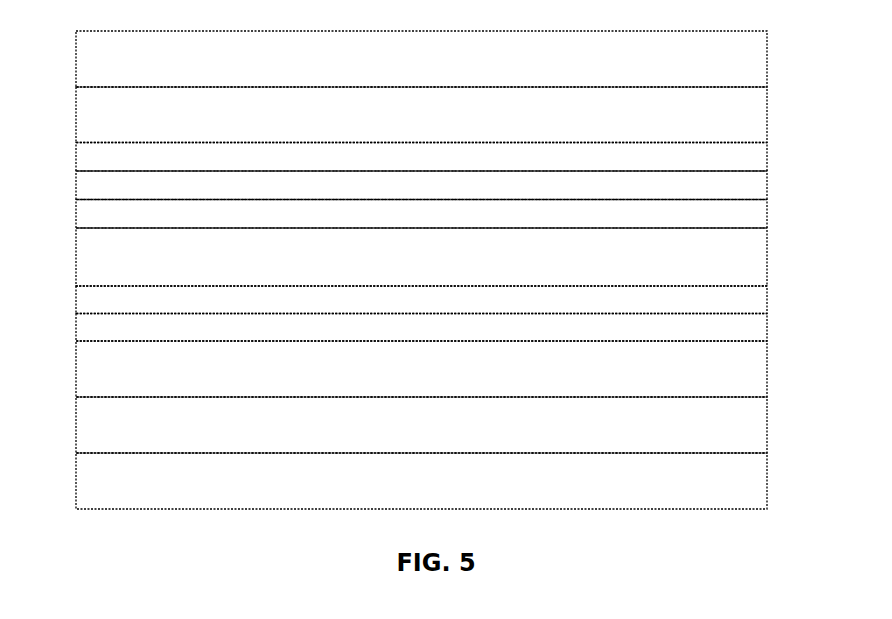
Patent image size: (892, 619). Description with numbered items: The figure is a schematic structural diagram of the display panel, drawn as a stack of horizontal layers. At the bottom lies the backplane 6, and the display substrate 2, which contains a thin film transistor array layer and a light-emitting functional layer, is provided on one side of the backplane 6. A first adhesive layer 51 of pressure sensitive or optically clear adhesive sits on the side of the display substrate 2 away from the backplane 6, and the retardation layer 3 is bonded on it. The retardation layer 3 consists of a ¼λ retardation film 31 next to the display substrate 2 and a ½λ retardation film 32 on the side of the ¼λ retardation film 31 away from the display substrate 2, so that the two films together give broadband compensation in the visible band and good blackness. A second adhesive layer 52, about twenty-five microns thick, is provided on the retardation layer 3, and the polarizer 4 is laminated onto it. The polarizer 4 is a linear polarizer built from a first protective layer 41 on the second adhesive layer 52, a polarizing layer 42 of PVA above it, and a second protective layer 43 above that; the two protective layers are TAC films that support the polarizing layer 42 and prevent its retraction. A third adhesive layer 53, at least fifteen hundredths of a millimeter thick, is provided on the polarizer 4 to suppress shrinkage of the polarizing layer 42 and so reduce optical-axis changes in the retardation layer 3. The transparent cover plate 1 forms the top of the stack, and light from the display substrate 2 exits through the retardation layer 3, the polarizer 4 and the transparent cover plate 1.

The transparent cover plate 1 is at (740, 72).
The third adhesive layer 53 is at (103, 123).
The polarizer 4 is at (460, 181).
The second protective layer 43 is at (740, 160).
The polarizing layer 42 is at (740, 187).
The first protective layer 41 is at (448, 211).
The second adhesive layer 52 is at (103, 261).
The retardation layer 3 is at (460, 309).
The ½λ retardation film 32 is at (740, 300).
The ¼λ retardation film 31 is at (740, 328).
The first adhesive layer 51 is at (103, 376).
The display substrate 2 is at (740, 433).
The backplane 6 is at (103, 483).